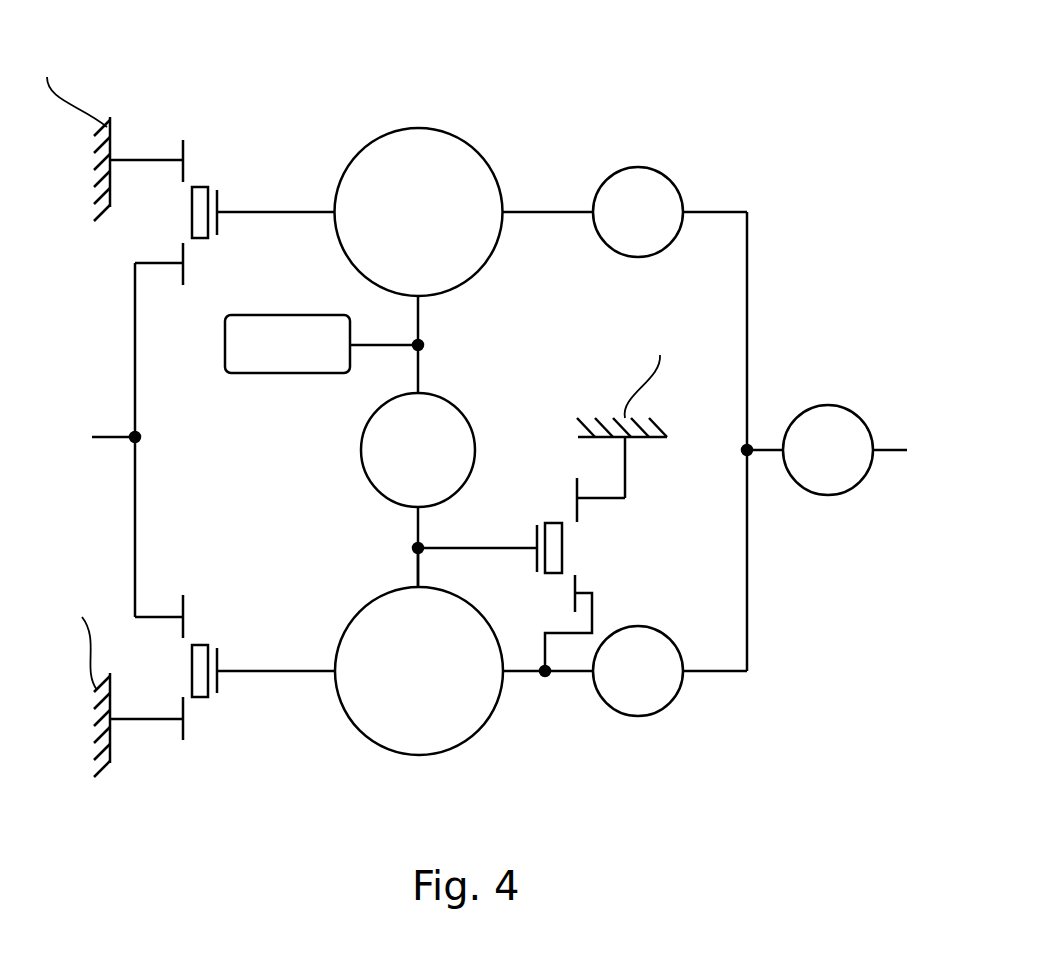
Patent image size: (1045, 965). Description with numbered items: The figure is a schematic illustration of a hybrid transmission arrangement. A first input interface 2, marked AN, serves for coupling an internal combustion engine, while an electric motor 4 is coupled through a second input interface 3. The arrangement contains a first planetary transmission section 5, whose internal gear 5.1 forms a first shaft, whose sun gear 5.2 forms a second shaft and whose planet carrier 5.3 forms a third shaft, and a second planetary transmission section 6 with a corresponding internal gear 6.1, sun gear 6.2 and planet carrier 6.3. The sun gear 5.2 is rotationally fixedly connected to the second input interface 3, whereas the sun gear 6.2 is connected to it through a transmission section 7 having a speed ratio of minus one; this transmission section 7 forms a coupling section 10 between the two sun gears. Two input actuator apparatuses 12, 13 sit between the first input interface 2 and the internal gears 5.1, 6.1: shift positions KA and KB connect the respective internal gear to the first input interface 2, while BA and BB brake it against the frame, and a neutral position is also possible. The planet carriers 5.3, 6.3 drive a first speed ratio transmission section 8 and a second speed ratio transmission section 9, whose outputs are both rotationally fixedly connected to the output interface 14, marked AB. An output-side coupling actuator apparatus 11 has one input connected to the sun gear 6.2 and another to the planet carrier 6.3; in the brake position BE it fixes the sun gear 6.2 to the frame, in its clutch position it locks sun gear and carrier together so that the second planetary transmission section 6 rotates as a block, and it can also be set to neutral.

The first input interface 2 is at (133, 438).
The second input interface 3 is at (423, 343).
The electric motor 4 is at (260, 375).
The first planetary transmission section 5 is at (405, 199).
The internal gear 5.1 is at (333, 200).
The sun gear 5.2 is at (420, 298).
The planet carrier 5.3 is at (505, 207).
The second planetary transmission section 6 is at (405, 685).
The internal gear 6.1 is at (333, 677).
The sun gear 6.2 is at (413, 587).
The planet carrier 6.3 is at (503, 673).
The transmission section 7 is at (355, 490).
The coupling section 10 is at (362, 437).
The first speed ratio transmission section 8 is at (650, 168).
The second speed ratio transmission section 9 is at (672, 703).
The output-side coupling actuator apparatus 11 is at (598, 529).
The input actuator apparatus 12 is at (143, 113).
The input actuator apparatus 13 is at (143, 782).
The output interface 14 is at (892, 448).